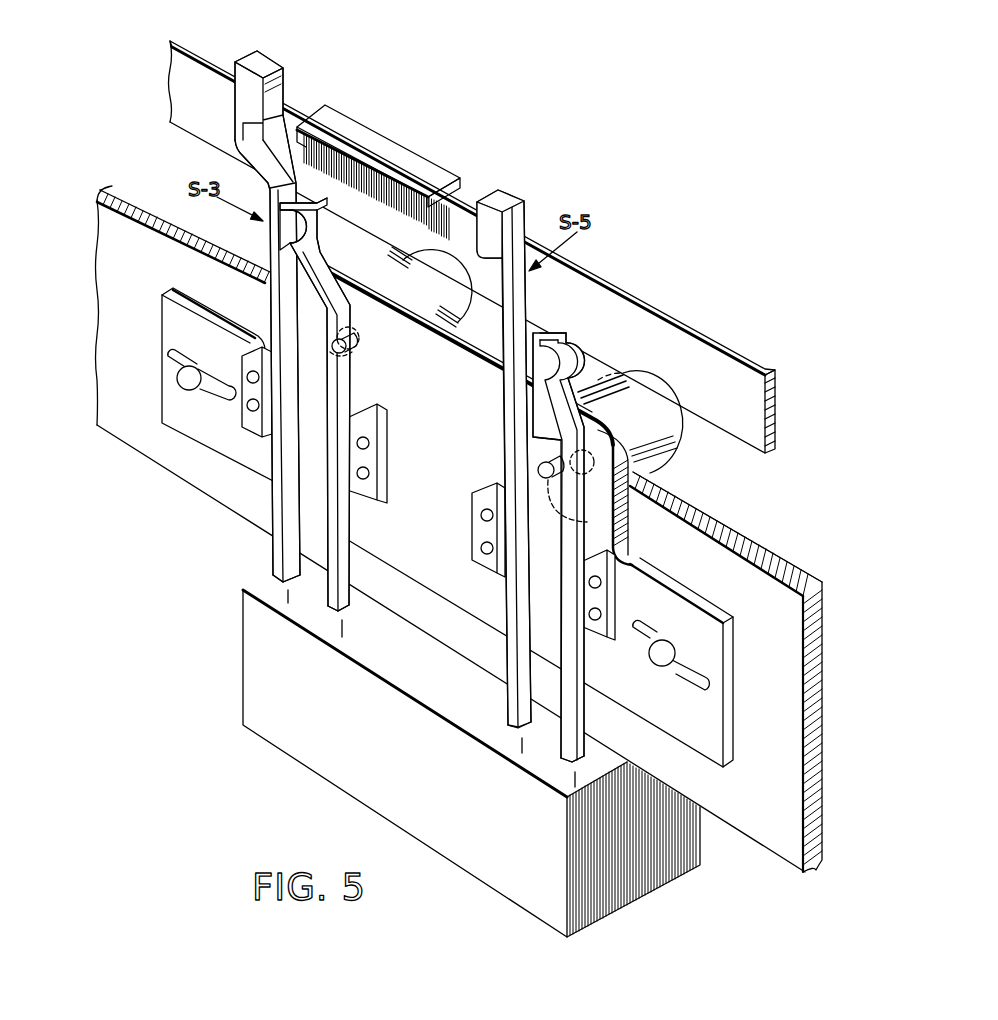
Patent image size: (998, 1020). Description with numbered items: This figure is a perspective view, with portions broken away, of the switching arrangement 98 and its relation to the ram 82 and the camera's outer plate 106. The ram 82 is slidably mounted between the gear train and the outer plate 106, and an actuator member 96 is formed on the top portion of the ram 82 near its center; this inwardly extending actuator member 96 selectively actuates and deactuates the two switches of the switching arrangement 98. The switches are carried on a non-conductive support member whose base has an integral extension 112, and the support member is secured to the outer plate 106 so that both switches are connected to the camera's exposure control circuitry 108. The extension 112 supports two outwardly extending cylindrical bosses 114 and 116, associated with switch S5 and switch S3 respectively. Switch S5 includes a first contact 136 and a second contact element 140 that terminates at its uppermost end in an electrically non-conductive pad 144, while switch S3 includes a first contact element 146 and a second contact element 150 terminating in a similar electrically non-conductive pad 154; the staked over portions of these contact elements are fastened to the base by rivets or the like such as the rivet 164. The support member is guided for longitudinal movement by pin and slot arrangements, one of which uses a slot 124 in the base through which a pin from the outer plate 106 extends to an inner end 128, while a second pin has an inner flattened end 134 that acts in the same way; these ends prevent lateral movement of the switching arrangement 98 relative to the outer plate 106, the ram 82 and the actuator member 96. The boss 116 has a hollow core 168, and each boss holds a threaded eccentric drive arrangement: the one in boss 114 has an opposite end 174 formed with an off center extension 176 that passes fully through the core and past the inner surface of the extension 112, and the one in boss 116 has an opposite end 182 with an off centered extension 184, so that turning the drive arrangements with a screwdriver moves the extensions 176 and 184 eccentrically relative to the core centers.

The ram 82 is at (632, 314).
The actuator member 96 is at (388, 150).
The switching arrangement 98 is at (793, 502).
The outer plate 106 is at (783, 730).
The exposure control circuitry 108 is at (633, 890).
The extension 112 is at (470, 373).
The boss 114 is at (678, 440).
The boss 116 is at (401, 289).
The slot 124 is at (700, 672).
The inner end 128 is at (657, 650).
The inner flattened end 134 is at (194, 380).
The first contact 136 is at (583, 560).
The second contact element 140 is at (513, 462).
The electrically non-conductive pad 144 is at (506, 202).
The first contact element 146 is at (344, 421).
The second contact element 150 is at (283, 327).
The electrically non-conductive pad 154 is at (281, 86).
The rivet 164 is at (363, 443).
The hollow core 168 is at (354, 330).
The opposite end 174 is at (585, 466).
The off center extension 176 is at (562, 493).
The opposite end 182 is at (352, 347).
The off centered extension 184 is at (338, 352).